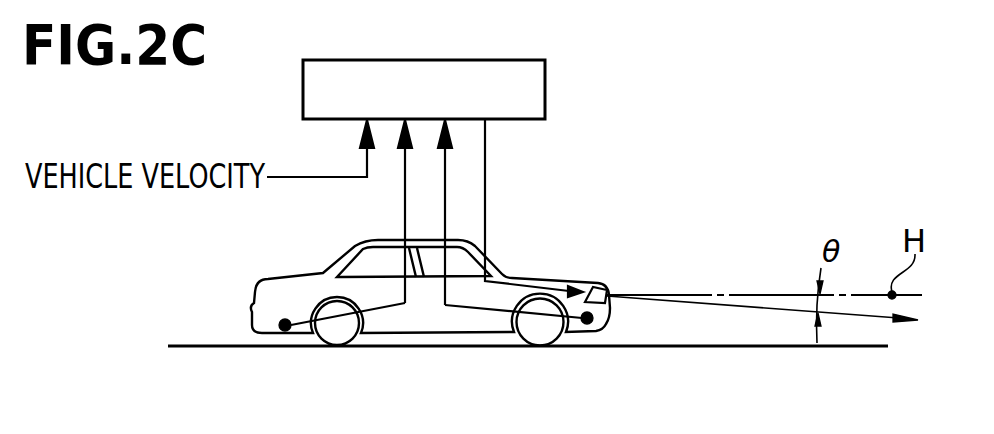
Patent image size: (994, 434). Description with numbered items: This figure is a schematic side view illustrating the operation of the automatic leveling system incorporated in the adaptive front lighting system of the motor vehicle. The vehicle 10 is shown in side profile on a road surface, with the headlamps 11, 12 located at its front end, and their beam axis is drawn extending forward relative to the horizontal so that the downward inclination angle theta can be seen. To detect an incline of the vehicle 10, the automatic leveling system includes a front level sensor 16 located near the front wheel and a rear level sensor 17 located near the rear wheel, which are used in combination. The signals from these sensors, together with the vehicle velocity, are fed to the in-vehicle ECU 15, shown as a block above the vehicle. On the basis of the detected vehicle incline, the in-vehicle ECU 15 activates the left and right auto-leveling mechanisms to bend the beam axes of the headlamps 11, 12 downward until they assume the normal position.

The vehicle 10 is at (350, 245).
The headlamp 11 is at (603, 247).
The headlamp 12 is at (590, 285).
The in-vehicle ECU 15 is at (546, 90).
The front level sensor 16 is at (590, 324).
The rear level sensor 17 is at (285, 331).